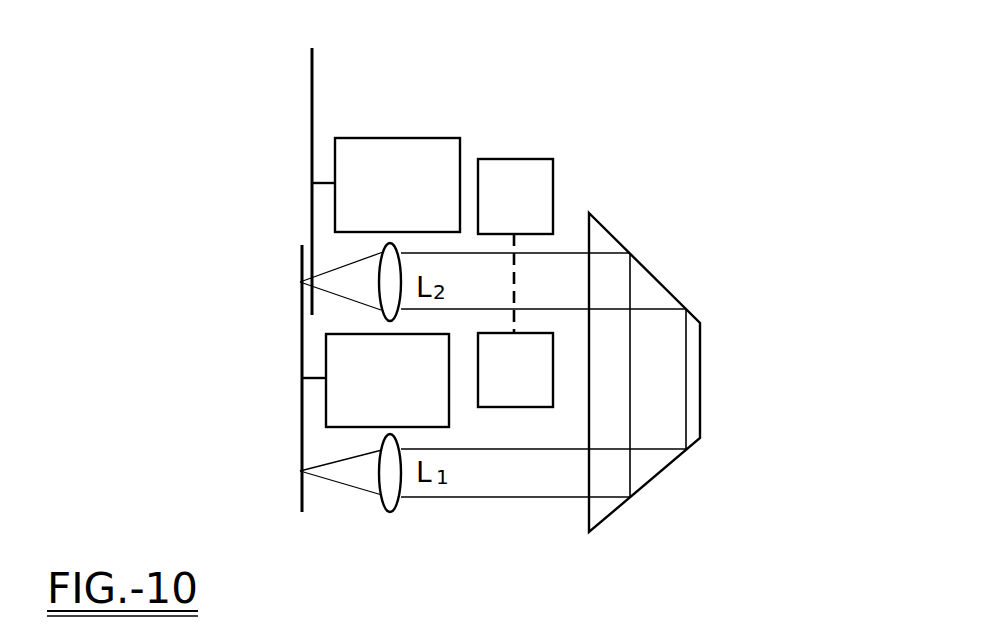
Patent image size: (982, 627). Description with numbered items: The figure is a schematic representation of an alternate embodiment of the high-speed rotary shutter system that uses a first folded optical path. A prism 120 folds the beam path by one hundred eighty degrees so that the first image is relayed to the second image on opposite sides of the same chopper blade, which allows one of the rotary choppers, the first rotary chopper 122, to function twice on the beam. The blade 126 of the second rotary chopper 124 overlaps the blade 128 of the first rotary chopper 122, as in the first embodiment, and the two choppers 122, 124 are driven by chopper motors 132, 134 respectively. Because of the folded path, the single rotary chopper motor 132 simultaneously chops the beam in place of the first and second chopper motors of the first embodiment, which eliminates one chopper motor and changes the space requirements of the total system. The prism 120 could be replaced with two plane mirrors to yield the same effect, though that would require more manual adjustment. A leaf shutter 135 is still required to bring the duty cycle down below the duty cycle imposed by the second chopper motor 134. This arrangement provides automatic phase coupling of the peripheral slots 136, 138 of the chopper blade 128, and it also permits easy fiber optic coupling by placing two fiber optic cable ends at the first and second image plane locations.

The prism 120 is at (663, 283).
The first rotary chopper 122 is at (282, 385).
The second rotary chopper 124 is at (247, 175).
The blade 126 is at (312, 115).
The blade 128 is at (302, 350).
The chopper motor 132 is at (449, 406).
The chopper motor 134 is at (403, 138).
The leaf shutter 135 is at (541, 159).
The peripheral slot 136 is at (300, 282).
The peripheral slot 138 is at (300, 470).